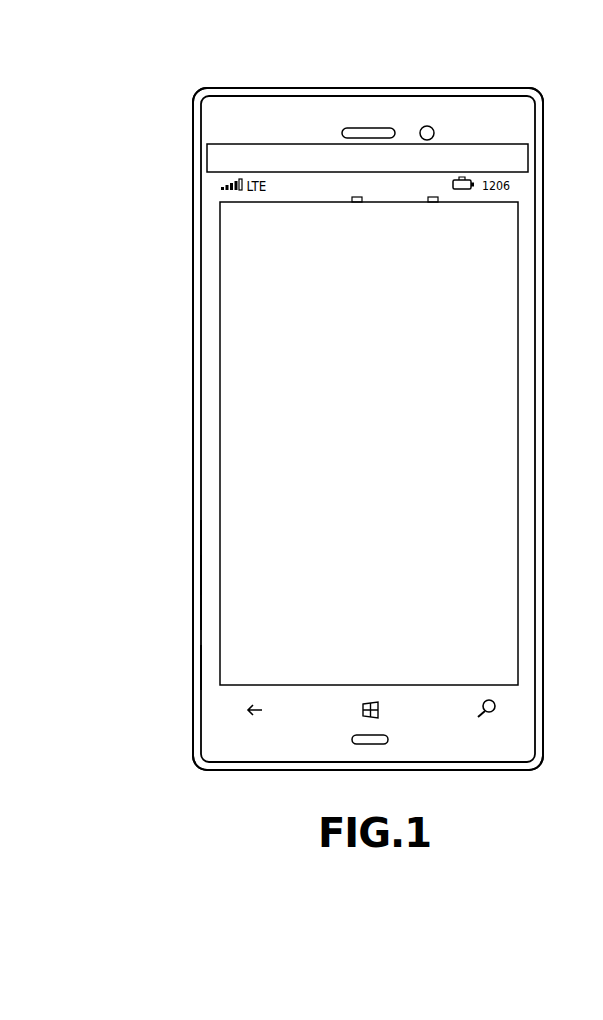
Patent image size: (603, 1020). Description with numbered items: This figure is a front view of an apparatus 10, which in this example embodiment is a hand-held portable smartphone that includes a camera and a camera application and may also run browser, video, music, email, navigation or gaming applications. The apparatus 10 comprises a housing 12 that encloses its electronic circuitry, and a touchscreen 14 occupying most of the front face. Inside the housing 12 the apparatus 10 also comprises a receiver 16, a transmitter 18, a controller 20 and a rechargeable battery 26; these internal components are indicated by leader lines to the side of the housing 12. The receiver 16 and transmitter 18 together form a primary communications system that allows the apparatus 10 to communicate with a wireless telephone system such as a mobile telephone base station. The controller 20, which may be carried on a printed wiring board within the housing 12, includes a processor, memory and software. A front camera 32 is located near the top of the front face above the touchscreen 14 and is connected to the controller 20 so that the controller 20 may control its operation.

The apparatus 10 is at (158, 153).
The housing 12 is at (193, 367).
The touchscreen 14 is at (255, 492).
The receiver 16 is at (192, 537).
The transmitter 18 is at (192, 570).
The controller 20 is at (192, 602).
The rechargeable battery 26 is at (192, 660).
The front camera 32 is at (429, 128).